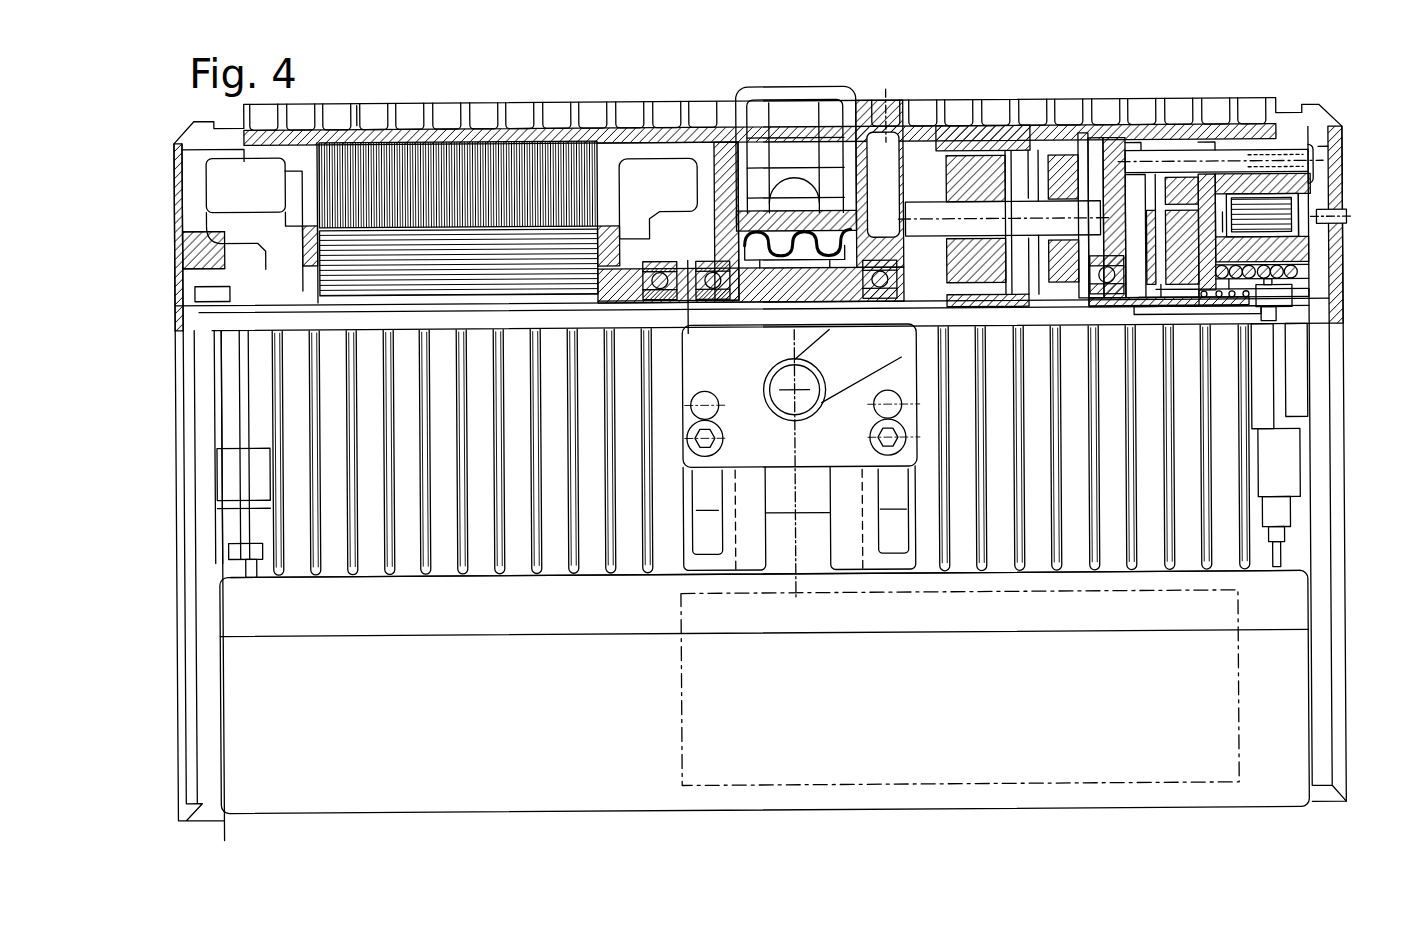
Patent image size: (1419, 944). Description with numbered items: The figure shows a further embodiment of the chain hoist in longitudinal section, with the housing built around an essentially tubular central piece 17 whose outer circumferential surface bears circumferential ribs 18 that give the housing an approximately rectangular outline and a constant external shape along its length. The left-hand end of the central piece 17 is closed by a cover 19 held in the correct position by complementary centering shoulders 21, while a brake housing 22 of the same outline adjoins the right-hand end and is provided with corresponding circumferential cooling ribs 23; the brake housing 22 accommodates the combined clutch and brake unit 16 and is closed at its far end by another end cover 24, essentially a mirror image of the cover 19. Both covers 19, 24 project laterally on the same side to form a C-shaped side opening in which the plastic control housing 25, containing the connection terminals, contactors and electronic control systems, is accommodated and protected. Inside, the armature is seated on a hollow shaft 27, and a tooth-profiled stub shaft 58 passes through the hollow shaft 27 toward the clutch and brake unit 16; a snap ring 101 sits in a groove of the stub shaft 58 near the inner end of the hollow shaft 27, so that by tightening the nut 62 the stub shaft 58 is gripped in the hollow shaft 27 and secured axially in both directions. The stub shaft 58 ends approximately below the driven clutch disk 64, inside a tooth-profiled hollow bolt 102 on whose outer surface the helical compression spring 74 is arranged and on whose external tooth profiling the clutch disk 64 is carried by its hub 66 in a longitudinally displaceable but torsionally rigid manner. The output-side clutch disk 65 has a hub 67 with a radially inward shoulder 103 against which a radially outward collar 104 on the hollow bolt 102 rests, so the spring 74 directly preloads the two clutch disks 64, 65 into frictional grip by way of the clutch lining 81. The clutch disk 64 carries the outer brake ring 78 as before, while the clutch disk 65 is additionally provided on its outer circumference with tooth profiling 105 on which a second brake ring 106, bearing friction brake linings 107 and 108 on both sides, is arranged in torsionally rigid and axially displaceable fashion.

The combined clutch and brake unit 16 is at (1335, 106).
The central piece 17 is at (343, 92).
The ribs 18 is at (360, 103).
The cover 19 is at (181, 378).
The centering shoulders 21 is at (213, 148).
The brake housing 22 is at (1260, 52).
The cooling ribs 23 is at (1210, 566).
The end cover 24 is at (1340, 570).
The control housing 25 is at (559, 744).
The hollow shaft 27 is at (764, 312).
The stub shaft 58 is at (418, 334).
The nut 62 is at (186, 336).
The clutch disk 64 is at (1235, 268).
The clutch disk 65 is at (1105, 225).
The hub 66 is at (1178, 302).
The hub 67 is at (1130, 302).
The helical spring 74 is at (1258, 332).
The brake ring 78 is at (1200, 150).
The clutch lining 81 is at (1300, 245).
The snap ring 101 is at (690, 330).
The hollow bolt 102 is at (1236, 300).
The shoulder 103 is at (1285, 290).
The collar 104 is at (1180, 318).
The tooth profiling 105 is at (1162, 195).
The second brake ring 106 is at (1148, 205).
The friction brake lining 107 is at (1118, 200).
The friction brake lining 108 is at (1180, 180).